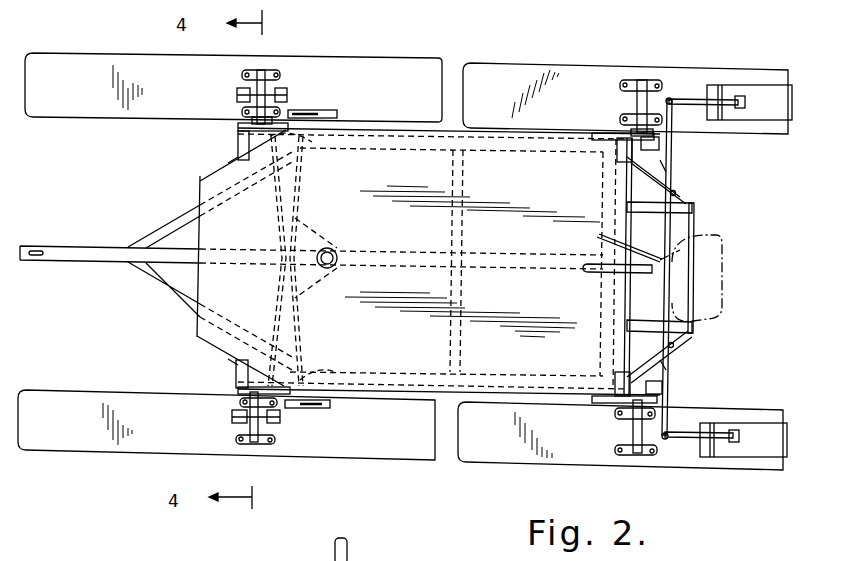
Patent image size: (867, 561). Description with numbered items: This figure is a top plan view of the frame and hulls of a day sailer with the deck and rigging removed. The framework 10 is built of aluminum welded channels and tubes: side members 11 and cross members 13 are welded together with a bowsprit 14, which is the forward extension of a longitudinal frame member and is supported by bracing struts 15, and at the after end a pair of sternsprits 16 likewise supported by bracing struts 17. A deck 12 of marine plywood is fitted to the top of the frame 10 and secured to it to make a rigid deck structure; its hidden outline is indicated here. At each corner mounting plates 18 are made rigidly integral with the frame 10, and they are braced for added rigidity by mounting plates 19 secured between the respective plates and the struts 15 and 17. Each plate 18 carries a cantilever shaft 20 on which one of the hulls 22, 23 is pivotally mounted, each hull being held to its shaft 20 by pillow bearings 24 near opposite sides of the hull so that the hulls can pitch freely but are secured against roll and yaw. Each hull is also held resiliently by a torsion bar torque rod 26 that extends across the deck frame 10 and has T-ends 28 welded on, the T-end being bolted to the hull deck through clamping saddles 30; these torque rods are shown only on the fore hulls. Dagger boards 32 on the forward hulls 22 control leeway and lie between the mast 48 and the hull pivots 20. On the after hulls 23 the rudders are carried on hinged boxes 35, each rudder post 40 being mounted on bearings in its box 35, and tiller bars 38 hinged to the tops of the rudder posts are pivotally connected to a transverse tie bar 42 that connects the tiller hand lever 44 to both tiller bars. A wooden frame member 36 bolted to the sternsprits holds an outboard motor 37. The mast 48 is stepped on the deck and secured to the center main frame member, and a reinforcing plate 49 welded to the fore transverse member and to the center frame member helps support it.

The frame 10 is at (698, 226).
The side members 11 is at (240, 141).
The deck 12 is at (198, 336).
The cross members 13 is at (460, 243).
The bowsprit 14 is at (66, 257).
The bracing struts 15 is at (158, 225).
The sternsprits 16 is at (695, 203).
The bracing struts 17 is at (673, 194).
The mounting plates 18 is at (238, 126).
The mounting plates 19 is at (233, 160).
The cantilever shaft 20 is at (257, 92).
The forward hulls 22 is at (81, 60).
The after hulls 23 is at (518, 70).
The pillow bearings 24 is at (280, 73).
The torsion bar torque rod 26 is at (307, 189).
The T-ends 28 is at (282, 97).
The clamping saddles 30 is at (342, 148).
The dagger boards 32 is at (325, 110).
The hinged boxes 35 is at (783, 107).
The wooden frame member 36 is at (700, 320).
The outboard motor 37 is at (727, 255).
The tiller bars 38 is at (685, 100).
The rudder post 40 is at (741, 97).
The transverse tie bar 42 is at (667, 288).
The tiller hand lever 44 is at (600, 260).
The mast 48 is at (337, 251).
The reinforcing plate 49 is at (324, 226).